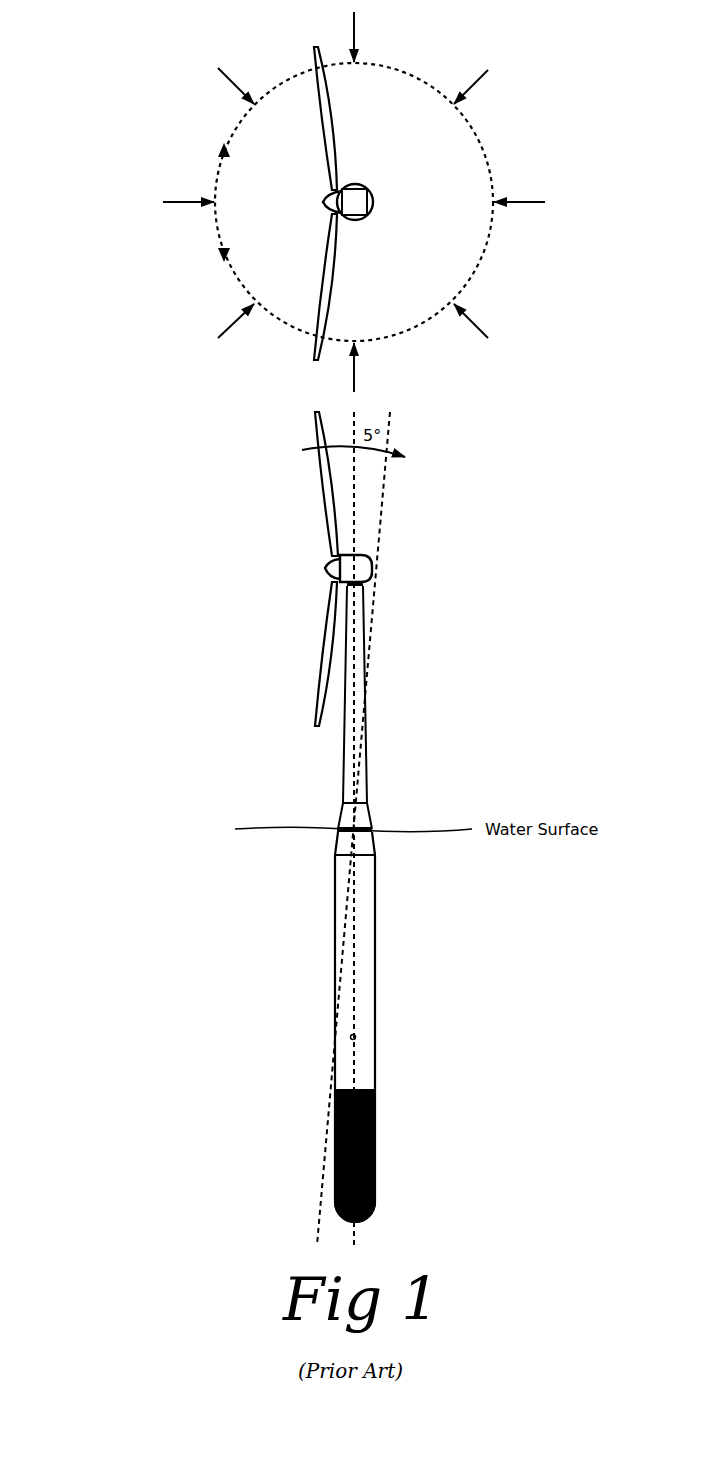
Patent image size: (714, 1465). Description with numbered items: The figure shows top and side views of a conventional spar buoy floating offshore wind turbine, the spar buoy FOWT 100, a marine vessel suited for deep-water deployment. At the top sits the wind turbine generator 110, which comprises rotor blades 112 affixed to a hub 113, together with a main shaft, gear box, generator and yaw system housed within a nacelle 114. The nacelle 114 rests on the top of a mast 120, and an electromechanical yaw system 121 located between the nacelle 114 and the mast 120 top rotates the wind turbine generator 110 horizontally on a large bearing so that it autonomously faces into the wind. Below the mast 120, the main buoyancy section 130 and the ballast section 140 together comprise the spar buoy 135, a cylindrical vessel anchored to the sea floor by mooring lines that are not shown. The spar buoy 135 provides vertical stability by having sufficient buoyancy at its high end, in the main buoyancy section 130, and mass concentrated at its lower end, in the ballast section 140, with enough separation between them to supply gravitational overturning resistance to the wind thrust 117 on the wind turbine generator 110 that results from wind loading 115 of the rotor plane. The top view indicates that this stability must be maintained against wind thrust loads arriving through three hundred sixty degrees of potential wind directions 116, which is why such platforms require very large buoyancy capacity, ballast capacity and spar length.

The spar buoy FOWT 100 is at (371, 180).
The wind turbine generator 110 is at (328, 553).
The rotor blades 112 is at (331, 303).
The hub 113 is at (323, 569).
The nacelle 114 is at (361, 555).
The wind loading 115 is at (110, 708).
The potential wind directions 116 is at (486, 76).
The wind thrust 117 is at (300, 202).
The mast 120 is at (367, 783).
The yaw system 121 is at (374, 585).
The main buoyancy section 130 is at (375, 957).
The spar buoy 135 is at (231, 829).
The ballast section 140 is at (375, 1153).